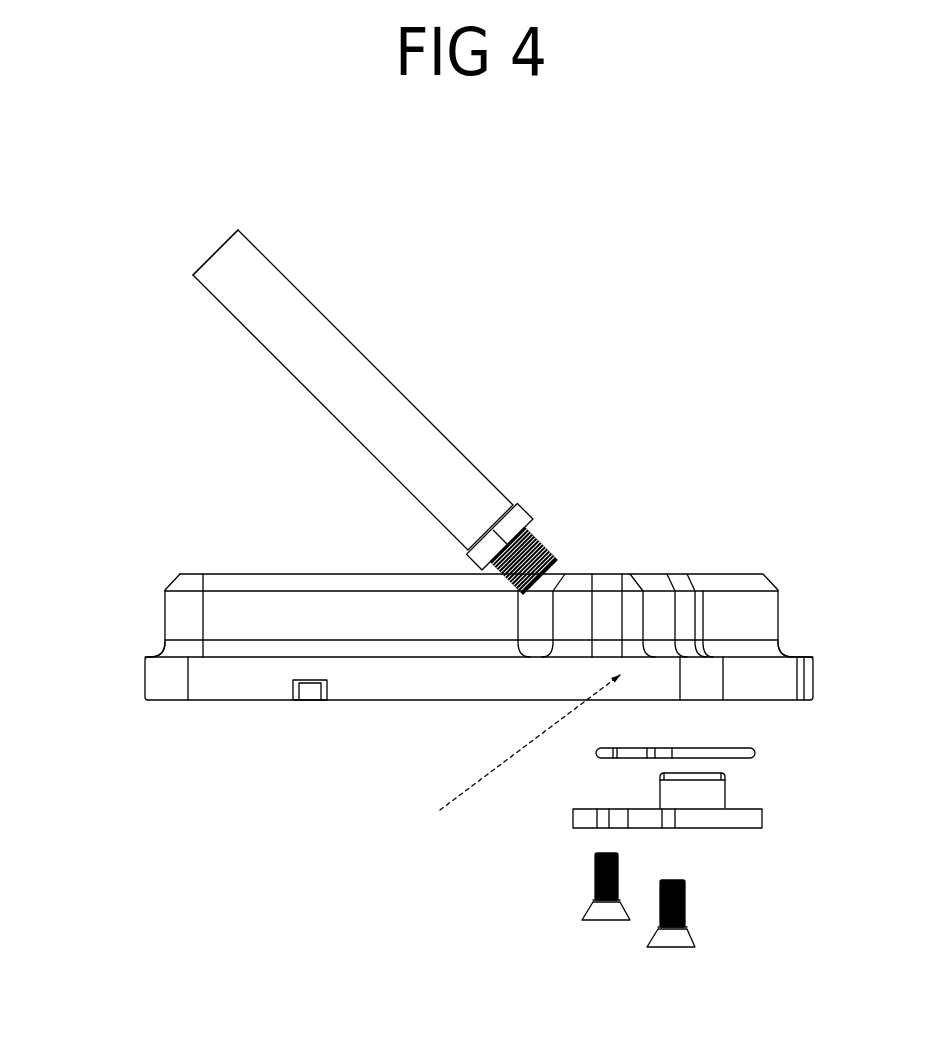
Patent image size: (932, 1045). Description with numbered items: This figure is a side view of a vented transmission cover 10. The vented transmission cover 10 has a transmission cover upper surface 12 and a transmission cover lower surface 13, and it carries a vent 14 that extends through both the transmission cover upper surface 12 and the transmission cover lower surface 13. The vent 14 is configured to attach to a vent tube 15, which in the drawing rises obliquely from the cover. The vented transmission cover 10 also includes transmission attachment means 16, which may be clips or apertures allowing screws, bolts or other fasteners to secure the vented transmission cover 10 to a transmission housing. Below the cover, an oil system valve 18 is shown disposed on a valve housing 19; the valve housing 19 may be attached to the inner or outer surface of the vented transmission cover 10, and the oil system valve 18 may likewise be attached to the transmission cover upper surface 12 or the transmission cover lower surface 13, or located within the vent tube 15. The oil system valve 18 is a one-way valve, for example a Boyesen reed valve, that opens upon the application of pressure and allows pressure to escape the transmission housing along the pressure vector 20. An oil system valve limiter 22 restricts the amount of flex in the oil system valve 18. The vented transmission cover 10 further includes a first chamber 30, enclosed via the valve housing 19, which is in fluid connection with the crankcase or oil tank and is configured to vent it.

The vented transmission cover 10 is at (783, 652).
The transmission cover upper surface 12 is at (663, 573).
The transmission cover lower surface 13 is at (450, 702).
The vent 14 is at (525, 512).
The vent tube 15 is at (338, 330).
The transmission attachment means 16 is at (148, 655).
The oil system valve 18 is at (730, 807).
The valve housing 19 is at (600, 808).
The pressure vector 20 is at (217, 250).
The oil system valve limiter 22 is at (730, 778).
The first chamber 30 is at (495, 755).